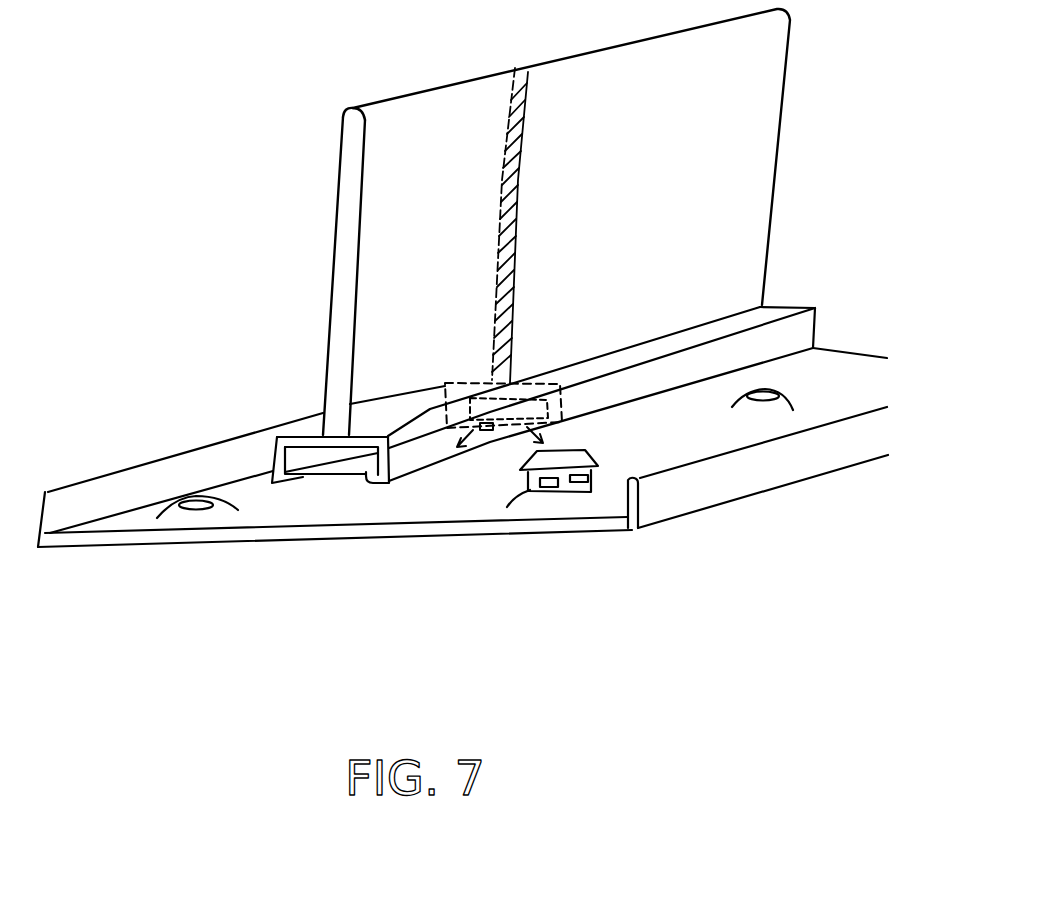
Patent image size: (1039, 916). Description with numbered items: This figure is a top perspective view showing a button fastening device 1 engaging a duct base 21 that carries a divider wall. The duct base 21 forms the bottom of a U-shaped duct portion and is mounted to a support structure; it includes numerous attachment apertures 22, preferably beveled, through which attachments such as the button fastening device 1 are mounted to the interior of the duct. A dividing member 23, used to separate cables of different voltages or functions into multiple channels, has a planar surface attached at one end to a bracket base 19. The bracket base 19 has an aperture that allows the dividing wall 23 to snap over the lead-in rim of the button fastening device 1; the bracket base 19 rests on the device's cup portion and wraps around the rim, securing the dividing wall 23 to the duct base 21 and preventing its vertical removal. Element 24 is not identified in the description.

The button fastening device 1 is at (560, 420).
The bracket base 19 is at (283, 440).
The duct base 21 is at (820, 384).
The attachment apertures 22 is at (193, 500).
The dividing member 23 is at (347, 199).
The mounting block 24 is at (586, 497).